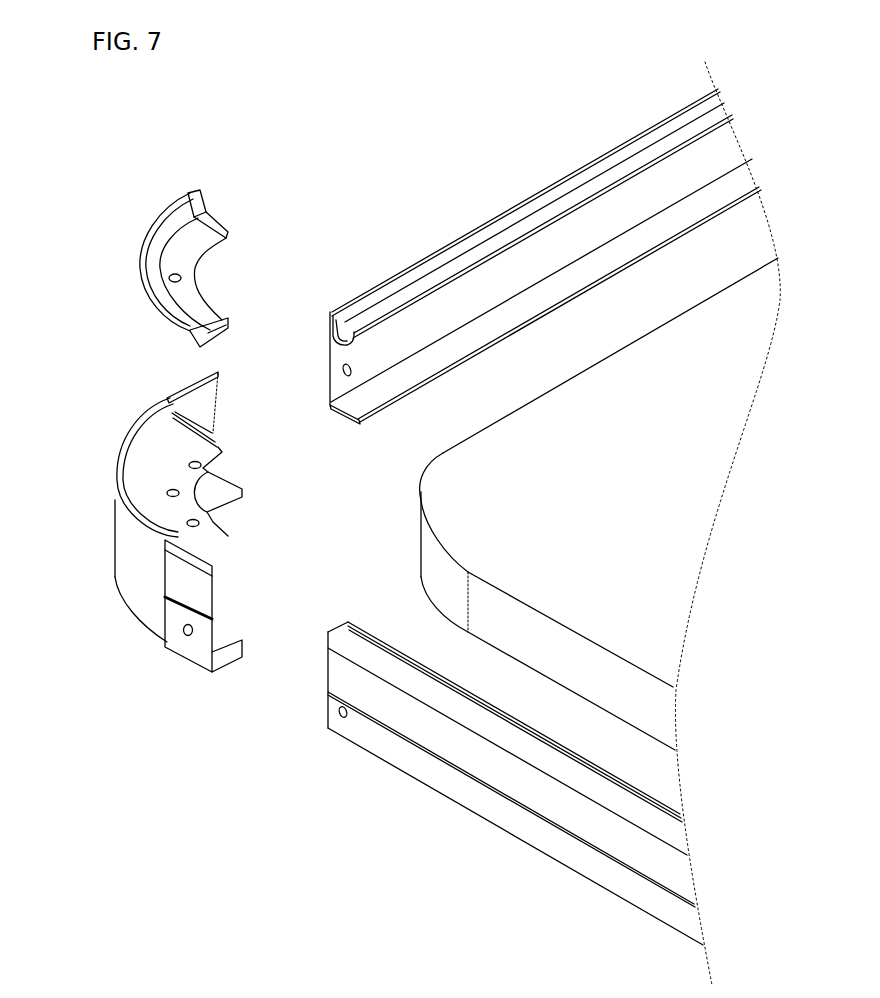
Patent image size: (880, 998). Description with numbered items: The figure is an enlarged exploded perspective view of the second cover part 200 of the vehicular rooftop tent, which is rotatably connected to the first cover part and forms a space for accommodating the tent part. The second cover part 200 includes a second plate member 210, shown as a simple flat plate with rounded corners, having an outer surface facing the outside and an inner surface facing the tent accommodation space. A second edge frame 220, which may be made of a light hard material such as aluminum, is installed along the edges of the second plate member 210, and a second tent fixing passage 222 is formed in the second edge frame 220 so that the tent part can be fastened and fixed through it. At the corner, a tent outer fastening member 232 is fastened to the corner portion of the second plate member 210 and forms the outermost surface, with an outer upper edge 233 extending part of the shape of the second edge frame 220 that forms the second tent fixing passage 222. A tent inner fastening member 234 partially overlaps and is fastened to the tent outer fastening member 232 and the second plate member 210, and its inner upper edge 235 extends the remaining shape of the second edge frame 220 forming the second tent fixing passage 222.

The second cover part 200 is at (488, 98).
The second plate member 210 is at (660, 578).
The second edge frame 220 is at (537, 517).
The second tent fixing passage 222 is at (365, 292).
The tent outer fastening member 232 is at (115, 545).
The outer upper edge 233 is at (118, 492).
The tent inner fastening member 234 is at (163, 250).
The inner upper edge 235 is at (140, 238).